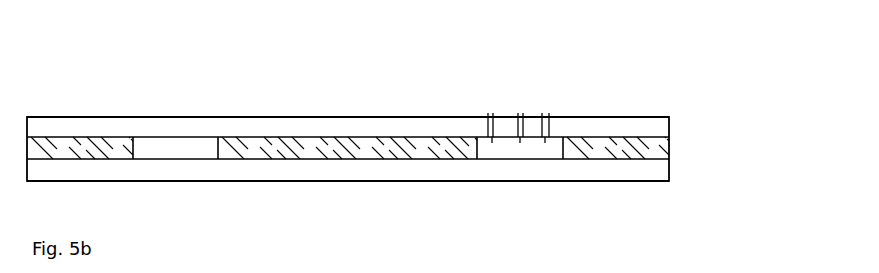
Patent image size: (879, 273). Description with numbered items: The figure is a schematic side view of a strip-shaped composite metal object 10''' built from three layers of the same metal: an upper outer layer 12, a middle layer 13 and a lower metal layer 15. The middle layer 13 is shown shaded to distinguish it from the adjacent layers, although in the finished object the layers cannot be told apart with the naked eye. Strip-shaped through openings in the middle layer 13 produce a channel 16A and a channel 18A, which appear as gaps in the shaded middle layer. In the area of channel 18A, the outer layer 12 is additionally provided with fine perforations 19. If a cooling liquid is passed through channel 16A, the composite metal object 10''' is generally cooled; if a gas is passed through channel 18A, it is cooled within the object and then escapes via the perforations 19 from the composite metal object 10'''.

The composite metal object 10''' is at (348, 106).
The outer layer 12 is at (658, 128).
The middle layer 13 is at (665, 153).
The metal layer 15 is at (663, 173).
The channel 16A is at (177, 150).
The channel 18A is at (553, 150).
The perforations 19 is at (550, 118).